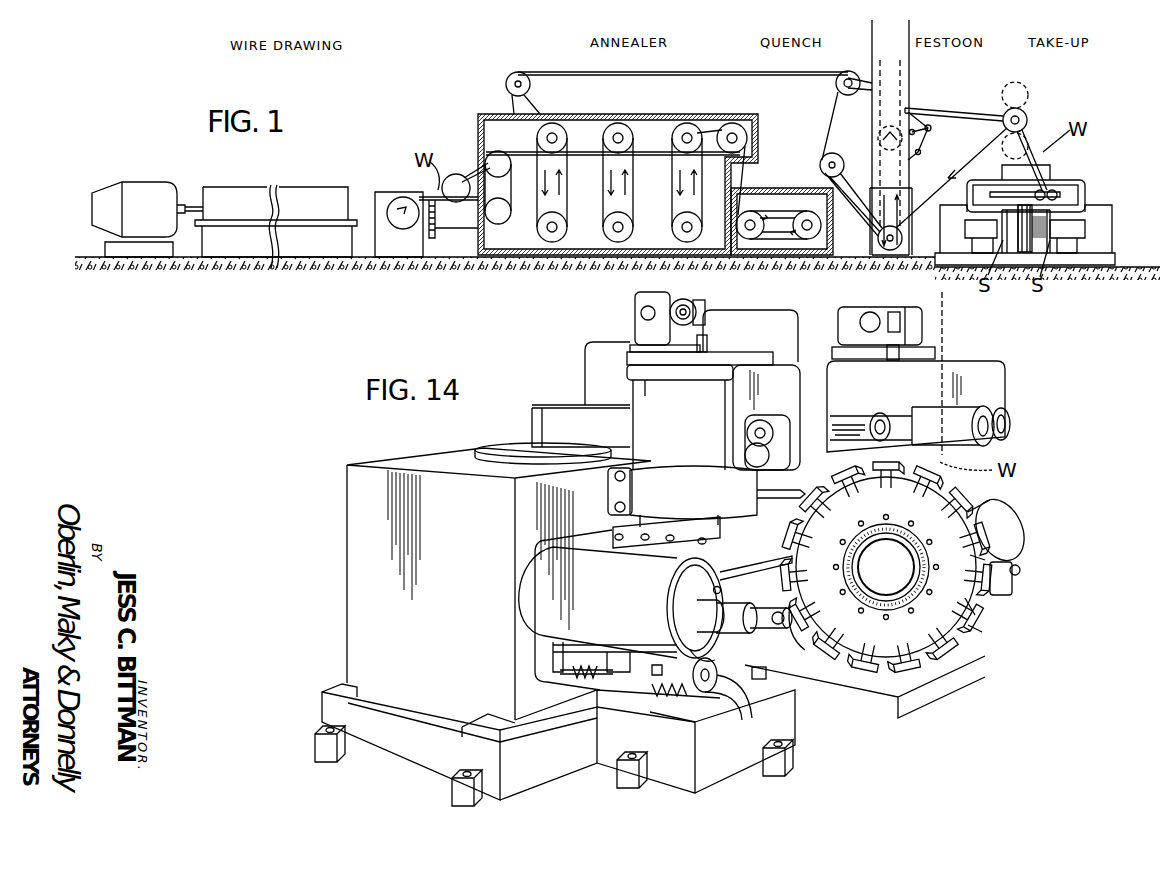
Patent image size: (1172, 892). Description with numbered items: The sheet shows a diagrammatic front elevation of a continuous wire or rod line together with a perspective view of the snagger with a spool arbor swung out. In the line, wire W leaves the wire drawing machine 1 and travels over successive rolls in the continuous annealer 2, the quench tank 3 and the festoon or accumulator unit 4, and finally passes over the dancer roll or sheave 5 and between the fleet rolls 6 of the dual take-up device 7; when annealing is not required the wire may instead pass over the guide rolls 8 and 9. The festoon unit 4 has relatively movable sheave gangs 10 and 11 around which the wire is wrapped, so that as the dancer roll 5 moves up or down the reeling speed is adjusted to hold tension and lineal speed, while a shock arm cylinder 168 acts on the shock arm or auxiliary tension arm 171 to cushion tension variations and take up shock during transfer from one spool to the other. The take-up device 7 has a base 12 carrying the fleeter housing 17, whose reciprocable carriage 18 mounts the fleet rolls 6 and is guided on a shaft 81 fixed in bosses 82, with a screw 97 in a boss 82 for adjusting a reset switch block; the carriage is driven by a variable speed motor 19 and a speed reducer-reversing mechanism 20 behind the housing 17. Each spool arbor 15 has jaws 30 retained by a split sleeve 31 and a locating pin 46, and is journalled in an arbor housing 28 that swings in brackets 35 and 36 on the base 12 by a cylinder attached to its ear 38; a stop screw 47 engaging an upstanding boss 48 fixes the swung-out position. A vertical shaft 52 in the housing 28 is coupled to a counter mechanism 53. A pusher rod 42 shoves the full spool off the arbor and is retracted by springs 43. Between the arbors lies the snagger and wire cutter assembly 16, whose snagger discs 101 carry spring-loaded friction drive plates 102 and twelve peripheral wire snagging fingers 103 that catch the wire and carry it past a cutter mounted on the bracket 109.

In FIG. 1, the wire drawing machine 1 is at (300, 186).
In FIG. 1, the continuous annealer 2 is at (677, 105).
In FIG. 1, the quench tank 3 is at (803, 179).
In FIG. 1, the festoon or accumulator unit 4 is at (920, 79).
In FIG. 1, the dancer roll or sheave 5 is at (1027, 110).
In FIG. 1, the fleet rolls 6 is at (1043, 192).
In FIG. 14, the fleet rolls 6 is at (1000, 407).
In FIG. 1, the dual take-up device 7 is at (1099, 176).
In FIG. 14, the dual take-up device 7 is at (1020, 361).
In FIG. 1, the guide roll 8 is at (506, 80).
In FIG. 1, the guide roll 9 is at (841, 72).
In FIG. 1, the sheave gang 10 is at (886, 246).
In FIG. 1, the movable sheave gang 11 is at (889, 113).
In FIG. 14, the base 12 is at (397, 456).
In FIG. 14, the spool arbor 15 is at (684, 596).
In FIG. 1, the snagger and wire cutter assembly 16 is at (1023, 252).
In FIG. 14, the snagger and wire cutter assembly 16 is at (913, 540).
In FIG. 14, the fleeter housing 17 is at (1020, 399).
In FIG. 14, the fleeter carriage 18 is at (885, 414).
In FIG. 14, the variable speed drive motor 19 is at (588, 353).
In FIG. 14, the speed reducer-reversing mechanism 20 is at (783, 312).
In FIG. 1, the arbor housing assembly 28 is at (1098, 223).
In FIG. 14, the arbor housing assembly 28 is at (548, 629).
In FIG. 14, the jaws 30 is at (810, 637).
In FIG. 14, the split sleeve 31 is at (723, 622).
In FIG. 14, the bracket 35 is at (700, 507).
In FIG. 14, the bracket 36 is at (767, 688).
In FIG. 14, the ear 38 is at (767, 560).
In FIG. 14, the pusher rod 42 is at (1058, 590).
In FIG. 14, the springs 43 is at (668, 695).
In FIG. 14, the locating pin 46 is at (713, 589).
In FIG. 14, the adjustable stop screw 47 is at (766, 673).
In FIG. 14, the upstanding boss 48 is at (703, 656).
In FIG. 14, the vertical shaft 52 is at (708, 340).
In FIG. 14, the counter mechanism 53 is at (960, 330).
In FIG. 14, the carriage guide shaft 81 is at (850, 415).
In FIG. 14, the boss 82 is at (766, 417).
In FIG. 14, the screw 97 is at (750, 455).
In FIG. 14, the snagger disc 101 is at (983, 630).
In FIG. 14, the spring-loaded friction drive plate 102 is at (920, 512).
In FIG. 14, the wire snagging fingers 103 is at (1015, 541).
In FIG. 14, the bracket 109 is at (800, 532).
In FIG. 1, the shock arm cylinder 168 is at (945, 128).
In FIG. 1, the shock arm or auxiliary tension arm 171 is at (945, 108).